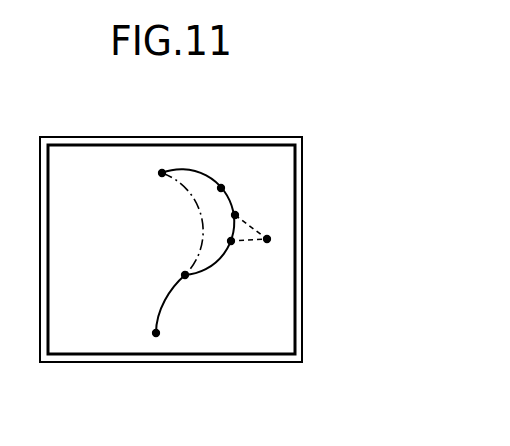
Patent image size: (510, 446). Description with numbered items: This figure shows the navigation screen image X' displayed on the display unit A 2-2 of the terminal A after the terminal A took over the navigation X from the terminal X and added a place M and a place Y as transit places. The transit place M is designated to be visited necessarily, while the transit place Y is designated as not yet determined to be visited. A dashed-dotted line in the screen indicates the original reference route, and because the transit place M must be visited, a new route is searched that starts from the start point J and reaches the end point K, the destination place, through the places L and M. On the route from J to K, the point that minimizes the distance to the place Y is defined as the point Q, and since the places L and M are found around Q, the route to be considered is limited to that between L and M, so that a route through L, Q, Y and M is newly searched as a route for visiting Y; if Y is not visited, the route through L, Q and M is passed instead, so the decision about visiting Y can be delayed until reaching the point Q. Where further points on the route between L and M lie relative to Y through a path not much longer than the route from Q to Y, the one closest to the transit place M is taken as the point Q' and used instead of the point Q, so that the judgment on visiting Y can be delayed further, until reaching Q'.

The display unit A 2-2 is at (171, 229).
The terminal A is at (252, 137).
The navigation screen image X' is at (269, 283).
The end point K is at (169, 162).
The transit place M is at (227, 177).
The point Q' is at (246, 211).
The point Q is at (238, 253).
The transit place Y is at (274, 250).
The transit place L is at (189, 291).
The start point J is at (160, 340).